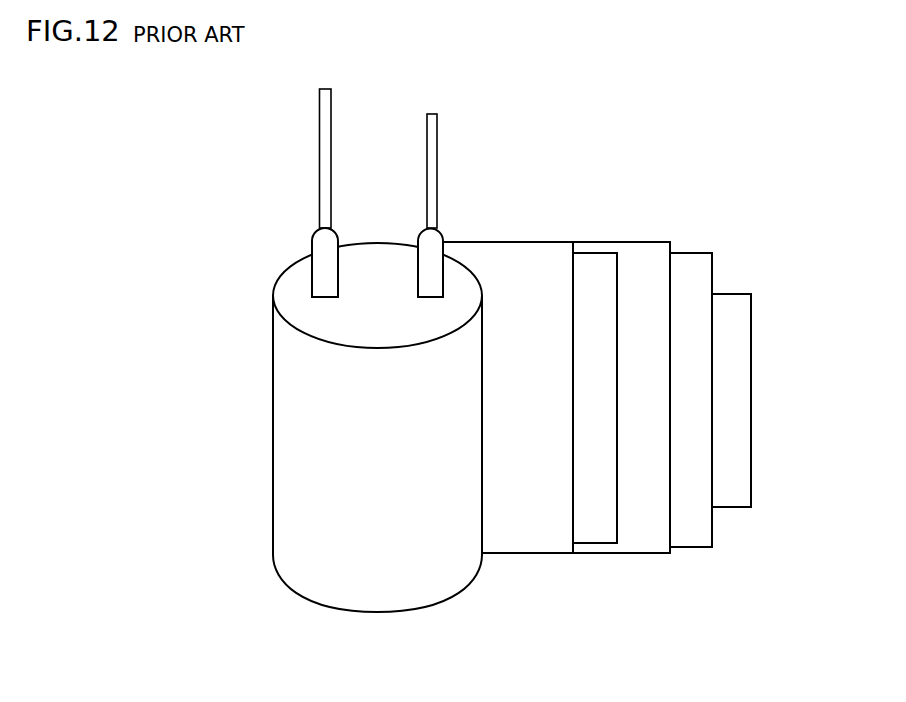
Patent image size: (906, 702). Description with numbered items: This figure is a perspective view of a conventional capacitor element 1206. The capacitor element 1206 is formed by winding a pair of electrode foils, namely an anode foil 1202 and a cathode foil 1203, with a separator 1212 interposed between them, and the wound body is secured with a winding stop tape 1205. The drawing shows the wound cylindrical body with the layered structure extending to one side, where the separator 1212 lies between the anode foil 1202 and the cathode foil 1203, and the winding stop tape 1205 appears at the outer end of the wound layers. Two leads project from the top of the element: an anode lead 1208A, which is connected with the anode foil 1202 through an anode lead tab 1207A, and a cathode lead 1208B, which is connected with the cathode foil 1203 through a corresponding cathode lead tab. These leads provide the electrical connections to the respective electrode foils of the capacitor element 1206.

The capacitor element 1206 is at (403, 71).
The anode lead tab 1207A is at (322, 248).
The anode lead 1208A is at (330, 135).
The cathode lead 1208B is at (433, 124).
The separator 1212 is at (539, 523).
The anode foil 1202 is at (605, 523).
The cathode foil 1203 is at (697, 525).
The winding stop tape 1205 is at (740, 397).